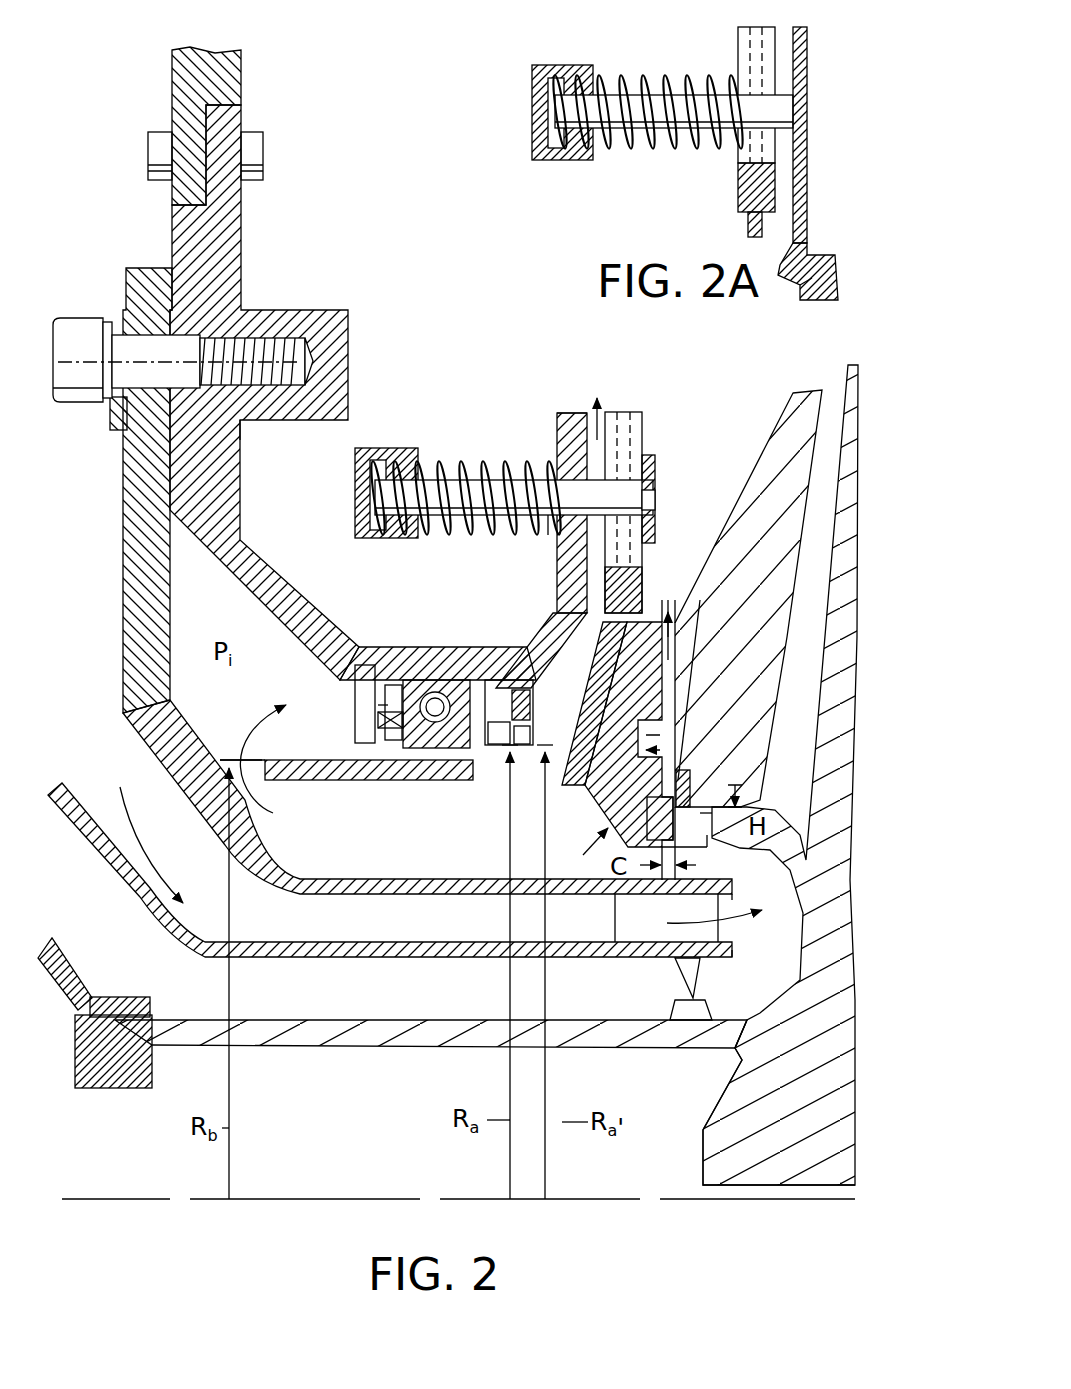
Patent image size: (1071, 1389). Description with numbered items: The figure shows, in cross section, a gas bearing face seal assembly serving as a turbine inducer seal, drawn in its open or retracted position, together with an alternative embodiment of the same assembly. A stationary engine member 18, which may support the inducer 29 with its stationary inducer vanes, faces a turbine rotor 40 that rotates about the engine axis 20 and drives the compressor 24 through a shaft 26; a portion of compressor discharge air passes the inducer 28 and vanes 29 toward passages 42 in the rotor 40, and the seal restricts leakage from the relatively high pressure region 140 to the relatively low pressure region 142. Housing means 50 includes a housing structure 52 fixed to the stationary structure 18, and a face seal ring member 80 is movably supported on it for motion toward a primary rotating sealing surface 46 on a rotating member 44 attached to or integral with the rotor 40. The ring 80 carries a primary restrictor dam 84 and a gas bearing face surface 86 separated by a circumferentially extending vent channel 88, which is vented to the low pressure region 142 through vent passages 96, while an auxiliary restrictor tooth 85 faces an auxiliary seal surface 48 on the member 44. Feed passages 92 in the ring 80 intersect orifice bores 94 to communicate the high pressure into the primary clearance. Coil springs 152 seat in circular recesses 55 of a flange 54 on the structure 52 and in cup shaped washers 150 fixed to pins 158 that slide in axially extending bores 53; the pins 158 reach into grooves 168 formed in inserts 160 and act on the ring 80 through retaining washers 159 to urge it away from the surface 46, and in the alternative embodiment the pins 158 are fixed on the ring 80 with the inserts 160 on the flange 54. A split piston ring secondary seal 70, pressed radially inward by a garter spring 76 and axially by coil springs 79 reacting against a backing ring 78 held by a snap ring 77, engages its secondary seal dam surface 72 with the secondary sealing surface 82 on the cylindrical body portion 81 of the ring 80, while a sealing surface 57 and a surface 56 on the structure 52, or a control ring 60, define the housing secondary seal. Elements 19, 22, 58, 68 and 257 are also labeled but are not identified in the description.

In FIG. 2, the stationary engine member 18 is at (230, 79).
In FIG. 2, the nut 19 is at (276, 141).
In FIG. 2, the engine axis 20 is at (145, 1199).
In FIG. 2, the flow path / wall 22 is at (125, 795).
In FIG. 2, the compressor 24 is at (68, 977).
In FIG. 2, the shaft 26 is at (320, 1027).
In FIG. 2, the inducer 28 is at (623, 950).
In FIG. 2, the stationary inducer vanes 29 is at (632, 913).
In FIG. 2, the turbine rotor 40 is at (717, 1167).
In FIG. 2, the passages 42 is at (808, 784).
In FIG. 2, the rotating member 44 is at (750, 520).
In FIG. 2, the primary rotating sealing surface 46 is at (673, 688).
In FIG. 2, the auxiliary seal surface 48 is at (685, 805).
In FIG. 2, the housing means 50 is at (350, 296).
In FIG. 2, the housing structure 52 is at (237, 205).
In FIG. 2, the axially extending bore 53 is at (570, 458).
In FIG. 2, the flange 54 is at (568, 412).
In FIG. 2A, the flange 54 is at (748, 222).
In FIG. 2, the circular recesses 55 is at (545, 532).
In FIG. 2, the surface 56 is at (590, 793).
In FIG. 2, the sealing surface 57 is at (508, 773).
In FIG. 2, the piston 58 is at (487, 690).
In FIG. 2, the control ring 60 is at (482, 770).
In FIG. 2, the inclined plate 68 is at (494, 688).
In FIG. 2, the split piston ring secondary seal 70 is at (398, 688).
In FIG. 2, the secondary seal dam surface 72 is at (467, 780).
In FIG. 2, the garter spring 76 is at (447, 690).
In FIG. 2, the snap ring 77 is at (352, 688).
In FIG. 2, the backing ring 78 is at (378, 714).
In FIG. 2, the coil springs 79 is at (378, 728).
In FIG. 2, the face seal ring member 80 is at (580, 849).
In FIG. 2A, the face seal ring member 80 is at (814, 238).
In FIG. 2, the cylindrical body portion 81 is at (327, 775).
In FIG. 2, the face seal ring secondary sealing surface 82 is at (305, 757).
In FIG. 2, the primary restrictor dam 84 is at (690, 755).
In FIG. 2, the auxiliary restrictor tooth 85 is at (702, 815).
In FIG. 2, the gas bearing face surface 86 is at (676, 650).
In FIG. 2, the vent channel 88 is at (676, 748).
In FIG. 2, the feed passages 92 is at (618, 652).
In FIG. 2, the orifice bores 94 is at (645, 630).
In FIG. 2A, the orifice bores 94 is at (835, 275).
In FIG. 2, the vent passages 96 is at (585, 720).
In FIG. 2, the high pressure region 140 is at (392, 872).
In FIG. 2, the low pressure region 142 is at (612, 366).
In FIG. 2, the cup shaped washer 150 is at (383, 452).
In FIG. 2A, the cup shaped washer 150 is at (558, 68).
In FIG. 2, the coil springs 152 is at (432, 455).
In FIG. 2A, the coil springs 152 is at (615, 78).
In FIG. 2, the pin 158 is at (470, 478).
In FIG. 2A, the pin 158 is at (785, 113).
In FIG. 2, the retaining washers 159 is at (677, 500).
In FIG. 2, the inserts 160 is at (648, 393).
In FIG. 2A, the inserts 160 is at (730, 18).
In FIG. 2, the grooves 168 is at (635, 553).
In FIG. 2A, the grooves 168 is at (740, 160).
In FIG. 2, the bolt 257 is at (48, 420).